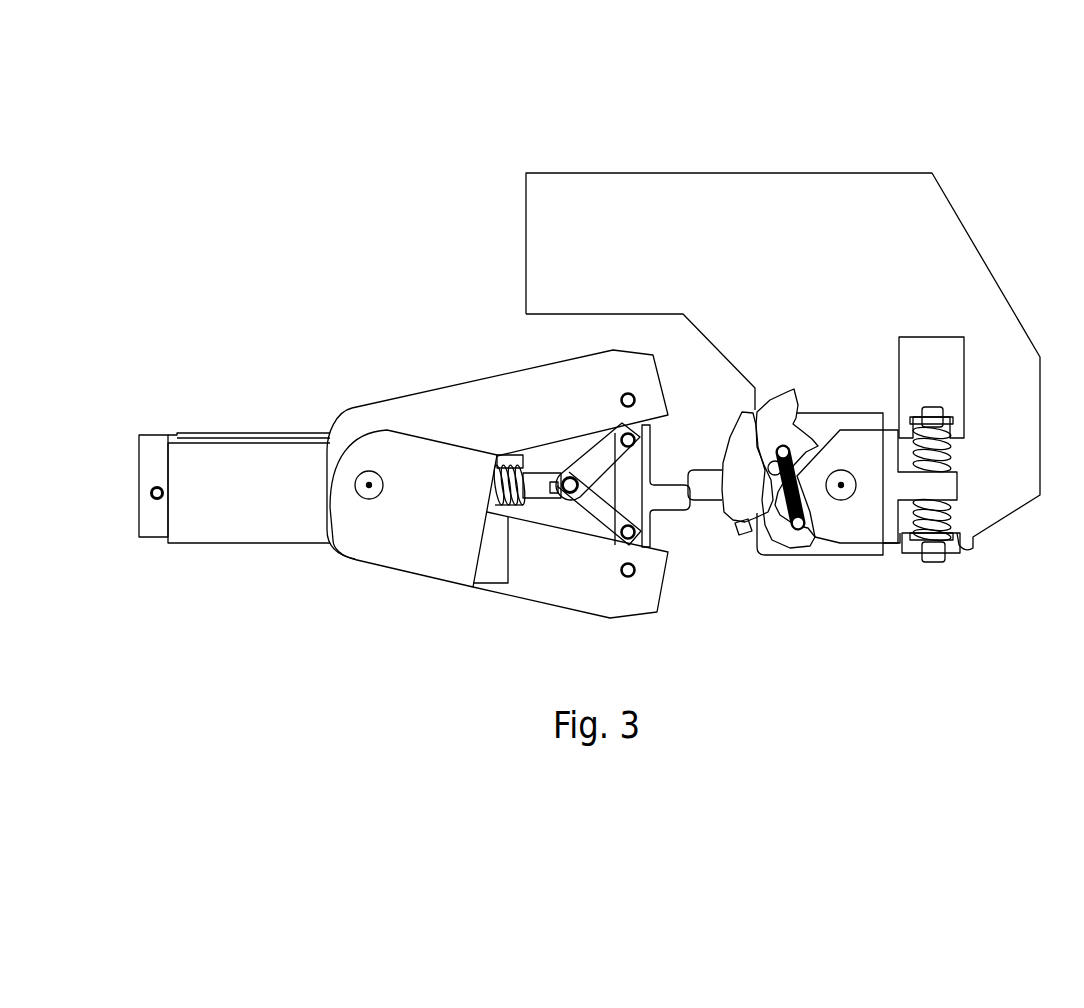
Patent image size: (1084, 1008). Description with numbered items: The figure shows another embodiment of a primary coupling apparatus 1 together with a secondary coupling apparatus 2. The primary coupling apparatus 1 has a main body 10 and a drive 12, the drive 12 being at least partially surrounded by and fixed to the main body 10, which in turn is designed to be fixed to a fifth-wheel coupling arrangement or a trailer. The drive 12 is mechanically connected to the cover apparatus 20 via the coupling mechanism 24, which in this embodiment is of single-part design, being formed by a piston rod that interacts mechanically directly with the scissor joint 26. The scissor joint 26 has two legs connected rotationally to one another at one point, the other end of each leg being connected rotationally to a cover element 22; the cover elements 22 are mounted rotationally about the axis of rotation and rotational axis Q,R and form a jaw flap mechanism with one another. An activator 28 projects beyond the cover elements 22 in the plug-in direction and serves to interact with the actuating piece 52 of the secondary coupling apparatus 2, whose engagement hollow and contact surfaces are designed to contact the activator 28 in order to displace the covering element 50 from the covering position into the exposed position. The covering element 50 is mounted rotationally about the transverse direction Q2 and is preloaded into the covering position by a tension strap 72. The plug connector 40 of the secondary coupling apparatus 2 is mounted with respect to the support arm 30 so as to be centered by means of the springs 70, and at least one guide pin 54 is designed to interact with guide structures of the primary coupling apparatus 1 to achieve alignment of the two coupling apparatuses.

The primary coupling apparatus 1 is at (225, 390).
The secondary coupling apparatus 2 is at (750, 149).
The main body 10 is at (223, 507).
The drive 12 is at (150, 440).
The cover apparatus 20 is at (353, 390).
The cover element 22 is at (380, 420).
The coupling mechanism 24 is at (543, 503).
The scissor joint 26 is at (578, 470).
The activator 28 is at (678, 503).
The support arm 30 is at (913, 213).
The plug connector 40 is at (838, 570).
The covering element 50 is at (787, 410).
The actuating piece 52 is at (745, 450).
The guide pin 54 is at (700, 493).
The spring 70 is at (498, 517).
The tension strap 72 is at (817, 528).
The axis of rotation and rotational axis Q,R is at (369, 488).
The transverse direction Q2 is at (842, 487).